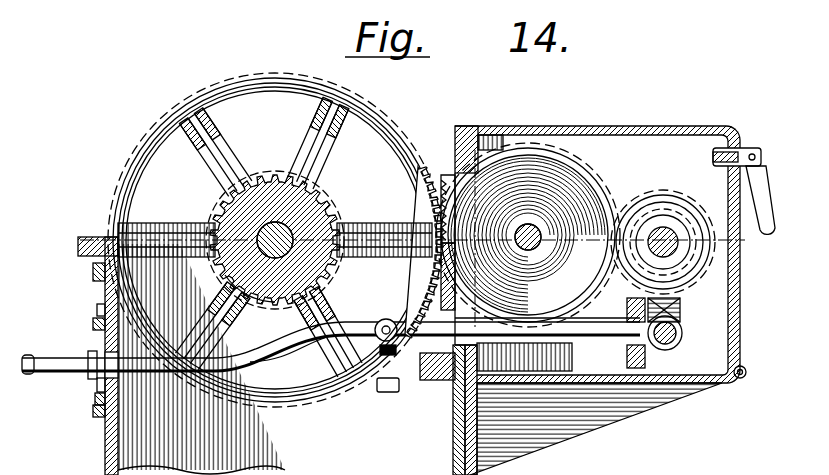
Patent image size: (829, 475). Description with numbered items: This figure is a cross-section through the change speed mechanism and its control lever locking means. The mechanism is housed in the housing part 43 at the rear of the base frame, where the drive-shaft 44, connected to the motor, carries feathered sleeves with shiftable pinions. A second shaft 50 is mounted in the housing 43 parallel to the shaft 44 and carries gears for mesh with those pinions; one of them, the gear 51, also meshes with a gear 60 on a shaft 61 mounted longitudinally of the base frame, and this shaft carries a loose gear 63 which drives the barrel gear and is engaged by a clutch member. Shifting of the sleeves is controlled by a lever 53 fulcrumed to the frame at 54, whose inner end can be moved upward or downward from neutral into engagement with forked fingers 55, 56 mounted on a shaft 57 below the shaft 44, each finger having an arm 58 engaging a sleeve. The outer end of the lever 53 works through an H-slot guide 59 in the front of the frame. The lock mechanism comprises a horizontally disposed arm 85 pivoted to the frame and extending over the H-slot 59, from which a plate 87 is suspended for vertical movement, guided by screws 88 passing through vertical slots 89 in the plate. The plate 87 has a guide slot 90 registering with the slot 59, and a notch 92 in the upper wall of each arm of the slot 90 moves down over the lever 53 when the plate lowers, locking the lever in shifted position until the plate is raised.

The housing part 43 is at (632, 128).
The drive-shaft 44 is at (668, 233).
The second shaft 50 is at (536, 243).
The gear 51 is at (447, 195).
The lever 53 is at (306, 350).
The fulcrum 54 is at (386, 320).
The forked finger 55 is at (634, 314).
The forked finger 56 is at (627, 355).
The shaft 57 is at (683, 334).
The arm 58 is at (680, 306).
The H-slot guide 59 is at (118, 390).
The gear 60 is at (390, 138).
The shaft 61 is at (226, 276).
The loose gear 63 is at (325, 213).
The arm 85 is at (92, 272).
The plate 87 is at (105, 318).
The screw 88 is at (100, 418).
The slot 89 is at (98, 400).
The guide slot 90 is at (101, 382).
The notch 92 is at (105, 338).